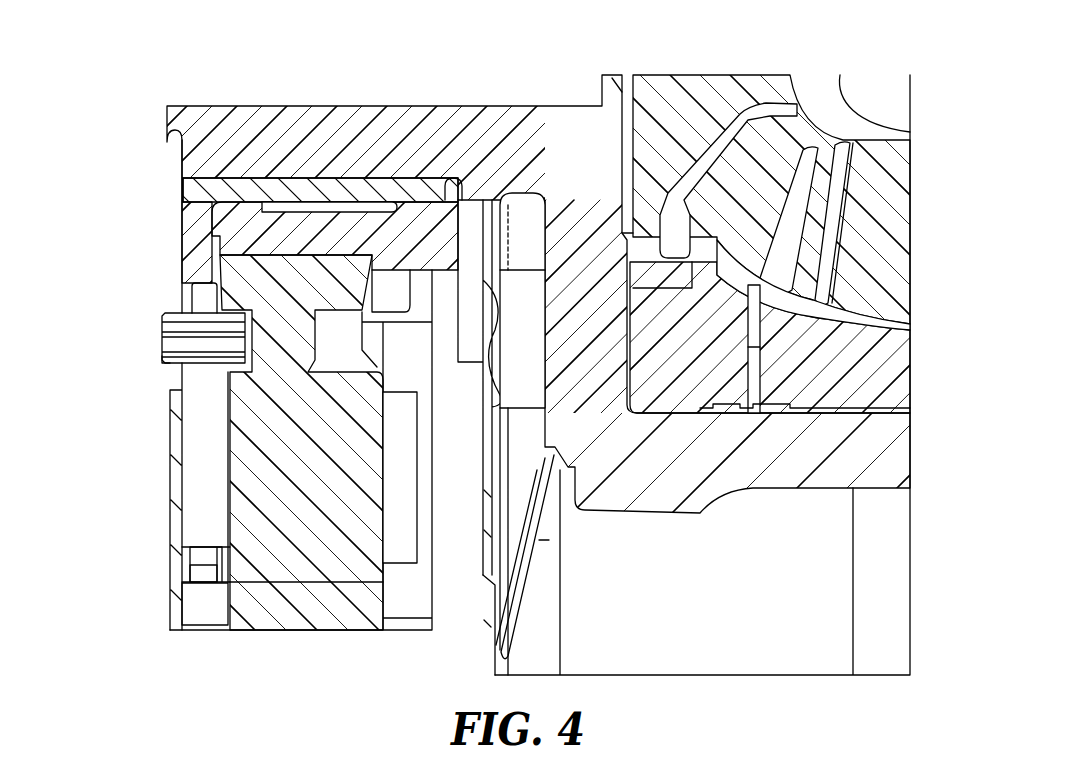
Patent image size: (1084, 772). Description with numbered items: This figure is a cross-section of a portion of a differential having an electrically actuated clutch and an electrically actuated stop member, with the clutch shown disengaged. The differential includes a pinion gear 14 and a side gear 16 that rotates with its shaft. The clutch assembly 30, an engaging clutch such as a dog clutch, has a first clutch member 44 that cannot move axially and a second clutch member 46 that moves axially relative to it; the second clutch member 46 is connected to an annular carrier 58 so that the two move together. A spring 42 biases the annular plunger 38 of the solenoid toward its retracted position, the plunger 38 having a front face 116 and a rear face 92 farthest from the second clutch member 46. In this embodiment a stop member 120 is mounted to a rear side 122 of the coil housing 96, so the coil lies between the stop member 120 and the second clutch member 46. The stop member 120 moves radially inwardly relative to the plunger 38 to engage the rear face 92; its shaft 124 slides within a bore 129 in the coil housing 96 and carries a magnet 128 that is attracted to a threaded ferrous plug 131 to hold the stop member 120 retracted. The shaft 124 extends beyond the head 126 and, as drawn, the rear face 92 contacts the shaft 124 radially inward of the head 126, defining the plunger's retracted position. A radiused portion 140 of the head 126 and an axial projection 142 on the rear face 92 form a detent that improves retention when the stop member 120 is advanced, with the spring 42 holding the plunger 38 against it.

The pinion gear 14 is at (886, 265).
The side gear 16 is at (688, 123).
The clutch assembly 30 is at (766, 428).
The plunger 38 is at (204, 199).
The spring 42 is at (525, 565).
The first clutch member 44 is at (882, 378).
The second clutch member 46 is at (685, 380).
The carrier 58 is at (547, 633).
The rear face 92 is at (217, 257).
The coil housing 96 is at (343, 615).
The front face 116 is at (497, 390).
The stop member 120 is at (152, 450).
The rear side 122 is at (175, 598).
The shaft 124 is at (202, 507).
The head 126 is at (166, 364).
The magnet 128 is at (203, 574).
The bore 129 is at (178, 567).
The ferrous plug 131 is at (232, 612).
The radiused portion 140 is at (165, 340).
The axial projection 142 is at (213, 237).